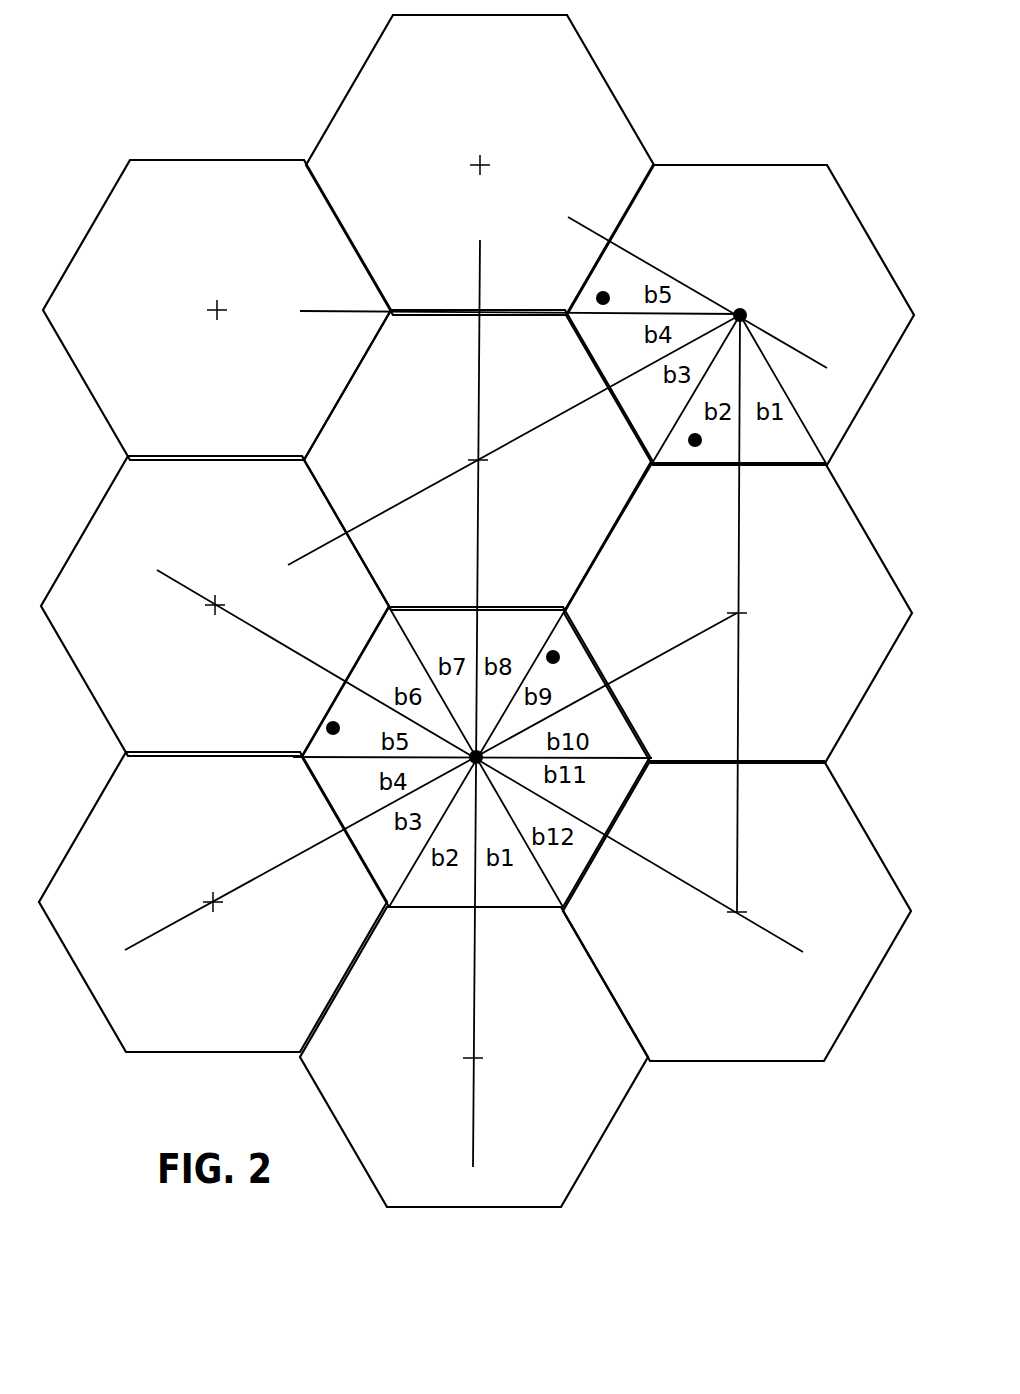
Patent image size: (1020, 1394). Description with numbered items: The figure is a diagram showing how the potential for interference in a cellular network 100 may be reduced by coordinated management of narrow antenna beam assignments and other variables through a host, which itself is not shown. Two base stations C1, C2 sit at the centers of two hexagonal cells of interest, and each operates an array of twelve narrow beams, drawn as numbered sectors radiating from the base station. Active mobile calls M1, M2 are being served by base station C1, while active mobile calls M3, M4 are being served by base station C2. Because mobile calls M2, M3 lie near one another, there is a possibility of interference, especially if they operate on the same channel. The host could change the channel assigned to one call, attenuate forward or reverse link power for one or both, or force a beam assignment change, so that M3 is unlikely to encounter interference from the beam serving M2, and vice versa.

The cellular network 100 is at (102, 1017).
The base station C1 is at (763, 298).
The base station C2 is at (540, 790).
The active mobile call M1 is at (603, 298).
The active mobile call M2 is at (695, 440).
The active mobile call M3 is at (553, 657).
The active mobile call M4 is at (333, 728).